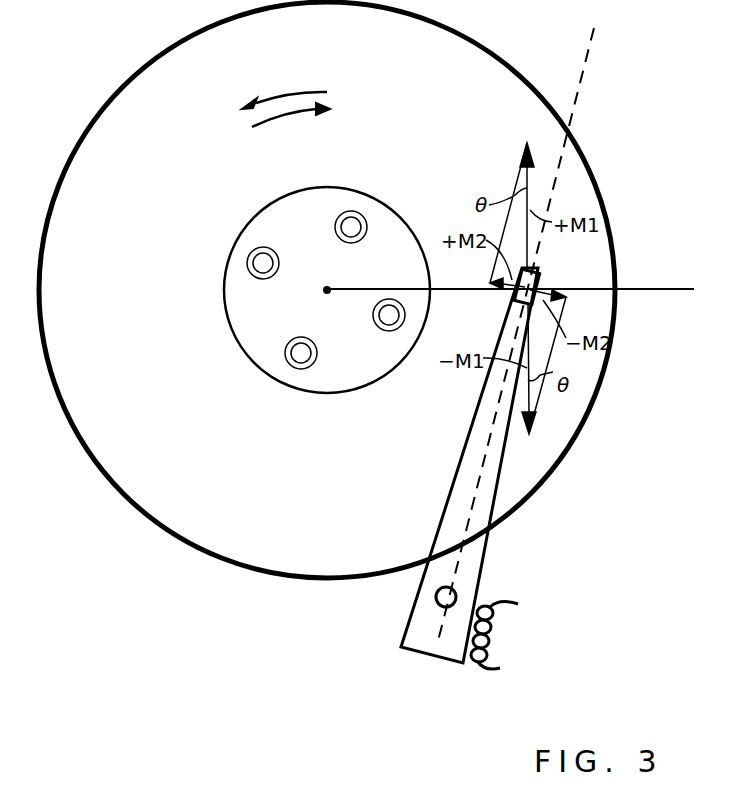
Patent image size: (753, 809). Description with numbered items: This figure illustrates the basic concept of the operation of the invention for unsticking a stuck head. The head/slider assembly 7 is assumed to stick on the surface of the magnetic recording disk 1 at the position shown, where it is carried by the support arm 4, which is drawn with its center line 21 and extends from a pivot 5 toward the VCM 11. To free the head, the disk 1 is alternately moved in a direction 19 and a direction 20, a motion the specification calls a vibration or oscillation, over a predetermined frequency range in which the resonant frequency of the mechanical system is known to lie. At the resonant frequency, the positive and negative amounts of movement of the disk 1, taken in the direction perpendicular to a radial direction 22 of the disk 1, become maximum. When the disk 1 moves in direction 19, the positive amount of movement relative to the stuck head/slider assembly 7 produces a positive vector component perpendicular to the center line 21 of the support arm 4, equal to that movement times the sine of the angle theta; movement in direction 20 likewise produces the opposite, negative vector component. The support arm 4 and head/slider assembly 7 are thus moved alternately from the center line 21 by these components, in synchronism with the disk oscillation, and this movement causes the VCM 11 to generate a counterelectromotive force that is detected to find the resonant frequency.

The magnetic recording disk 1 is at (456, 26).
The support arm 4 is at (484, 553).
The pivot shaft 5 is at (436, 593).
The head/slider assembly 7 is at (540, 282).
The VCM 11 is at (520, 637).
The direction 19 is at (284, 98).
The direction 20 is at (290, 118).
The center line of the support arm 21 is at (580, 98).
The radial direction of the disk 22 is at (644, 288).